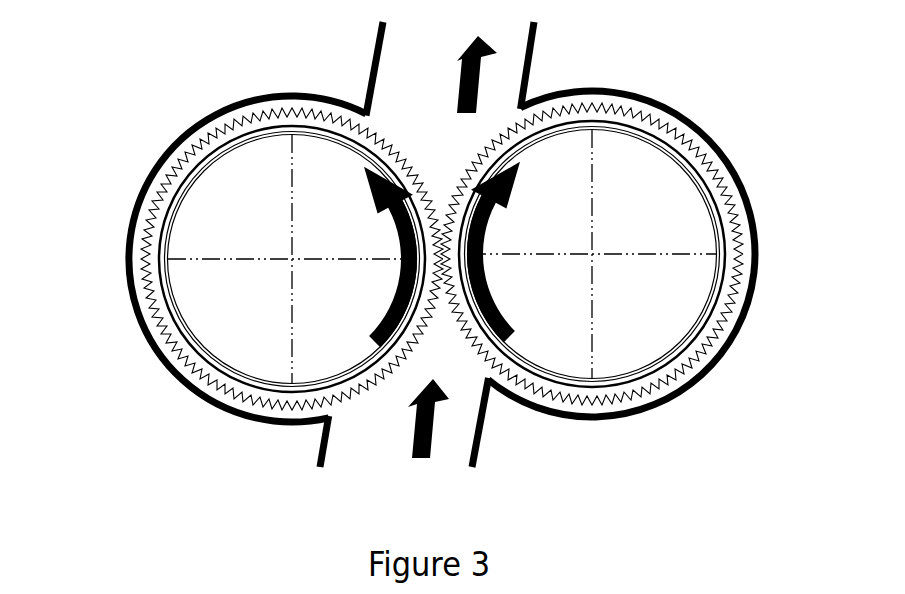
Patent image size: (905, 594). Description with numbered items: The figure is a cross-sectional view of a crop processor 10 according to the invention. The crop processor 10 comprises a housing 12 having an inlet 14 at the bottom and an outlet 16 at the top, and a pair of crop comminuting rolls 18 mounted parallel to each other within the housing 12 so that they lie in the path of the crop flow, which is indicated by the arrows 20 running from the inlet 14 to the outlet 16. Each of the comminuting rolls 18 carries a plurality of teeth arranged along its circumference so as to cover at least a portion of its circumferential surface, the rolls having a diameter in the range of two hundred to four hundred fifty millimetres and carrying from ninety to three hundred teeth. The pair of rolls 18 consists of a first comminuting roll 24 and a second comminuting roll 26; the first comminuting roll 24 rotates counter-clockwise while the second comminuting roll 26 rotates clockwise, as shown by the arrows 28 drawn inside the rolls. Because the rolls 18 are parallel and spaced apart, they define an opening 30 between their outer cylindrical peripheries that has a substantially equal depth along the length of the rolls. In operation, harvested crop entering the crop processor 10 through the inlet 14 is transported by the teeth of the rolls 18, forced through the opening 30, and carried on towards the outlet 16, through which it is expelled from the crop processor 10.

The crop processor 10 is at (180, 84).
The housing 12 is at (232, 405).
The inlet 14 is at (377, 468).
The outlet 16 is at (448, 32).
The crop comminuting rolls 18 is at (412, 290).
The arrows 20 is at (490, 53).
The first comminuting roll 24 is at (157, 197).
The second comminuting roll 26 is at (673, 293).
The arrows 28 is at (478, 280).
The opening 30 is at (443, 176).